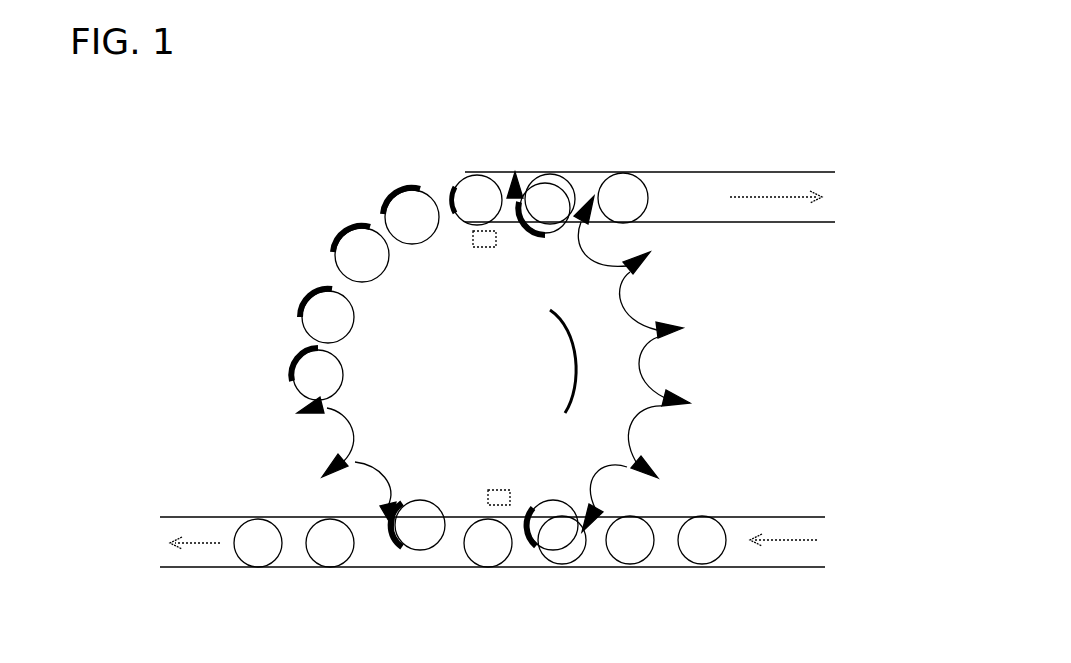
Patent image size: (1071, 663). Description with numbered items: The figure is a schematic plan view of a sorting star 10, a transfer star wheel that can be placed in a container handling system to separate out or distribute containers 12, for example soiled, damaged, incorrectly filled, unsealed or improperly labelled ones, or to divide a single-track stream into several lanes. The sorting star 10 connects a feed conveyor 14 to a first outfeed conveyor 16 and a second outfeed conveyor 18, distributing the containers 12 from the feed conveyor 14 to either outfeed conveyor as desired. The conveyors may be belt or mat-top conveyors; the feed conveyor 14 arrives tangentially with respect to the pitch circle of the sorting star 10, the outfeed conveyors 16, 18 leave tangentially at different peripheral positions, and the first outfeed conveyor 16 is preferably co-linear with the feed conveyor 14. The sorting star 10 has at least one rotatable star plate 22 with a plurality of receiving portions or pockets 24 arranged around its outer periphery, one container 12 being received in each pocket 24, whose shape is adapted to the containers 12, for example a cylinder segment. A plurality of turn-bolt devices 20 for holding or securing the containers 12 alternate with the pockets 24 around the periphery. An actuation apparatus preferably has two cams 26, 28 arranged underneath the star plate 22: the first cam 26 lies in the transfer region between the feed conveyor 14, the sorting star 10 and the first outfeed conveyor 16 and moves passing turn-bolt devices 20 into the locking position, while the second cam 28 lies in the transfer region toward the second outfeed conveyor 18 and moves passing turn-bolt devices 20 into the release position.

The sorting star 10 is at (272, 268).
The container 12 is at (312, 385).
The feed conveyor 14 is at (793, 550).
The first outfeed conveyor 16 is at (210, 558).
The second outfeed conveyor 18 is at (697, 180).
The turn-bolt device 20 is at (660, 330).
The star plate 22 is at (607, 403).
The pocket 24 is at (623, 303).
The first cam 26 is at (492, 500).
The second cam 28 is at (470, 247).